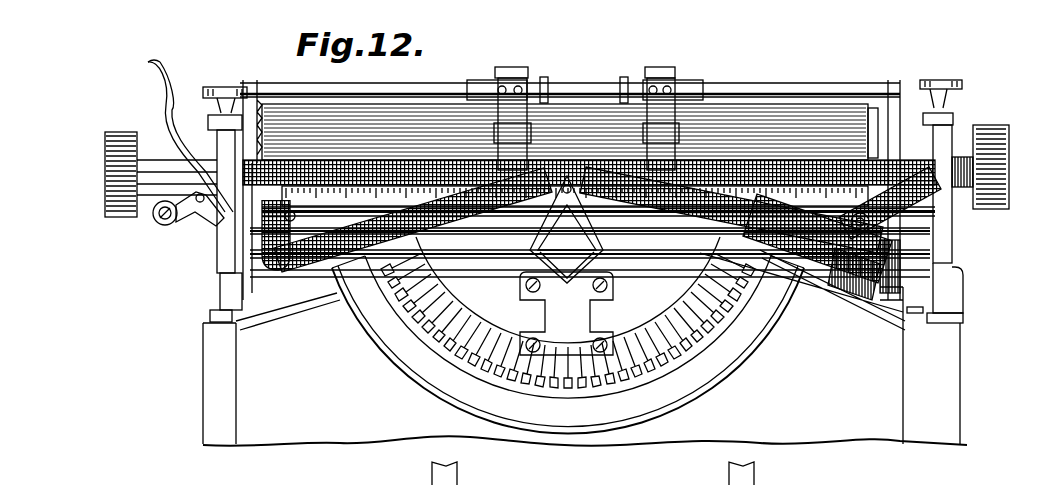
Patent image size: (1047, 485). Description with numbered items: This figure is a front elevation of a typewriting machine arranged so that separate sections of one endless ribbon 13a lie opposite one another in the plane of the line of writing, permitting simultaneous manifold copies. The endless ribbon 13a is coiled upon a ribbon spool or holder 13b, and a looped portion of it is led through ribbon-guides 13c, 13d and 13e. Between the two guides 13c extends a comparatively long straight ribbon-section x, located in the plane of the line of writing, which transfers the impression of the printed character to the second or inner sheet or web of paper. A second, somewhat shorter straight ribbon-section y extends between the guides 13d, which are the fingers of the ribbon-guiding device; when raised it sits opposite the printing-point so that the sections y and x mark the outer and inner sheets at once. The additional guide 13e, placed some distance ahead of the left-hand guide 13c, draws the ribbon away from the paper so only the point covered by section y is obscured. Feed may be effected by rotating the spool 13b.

The endless ribbon 13a is at (907, 207).
The ribbon spool or holder 13b is at (822, 275).
The ribbon-guides 13c is at (240, 158).
The ribbon-guides 13d is at (537, 162).
The additional ribbon-guide 13e is at (298, 217).
The straight ribbon-section x is at (447, 162).
The straight ribbon-section y is at (578, 170).